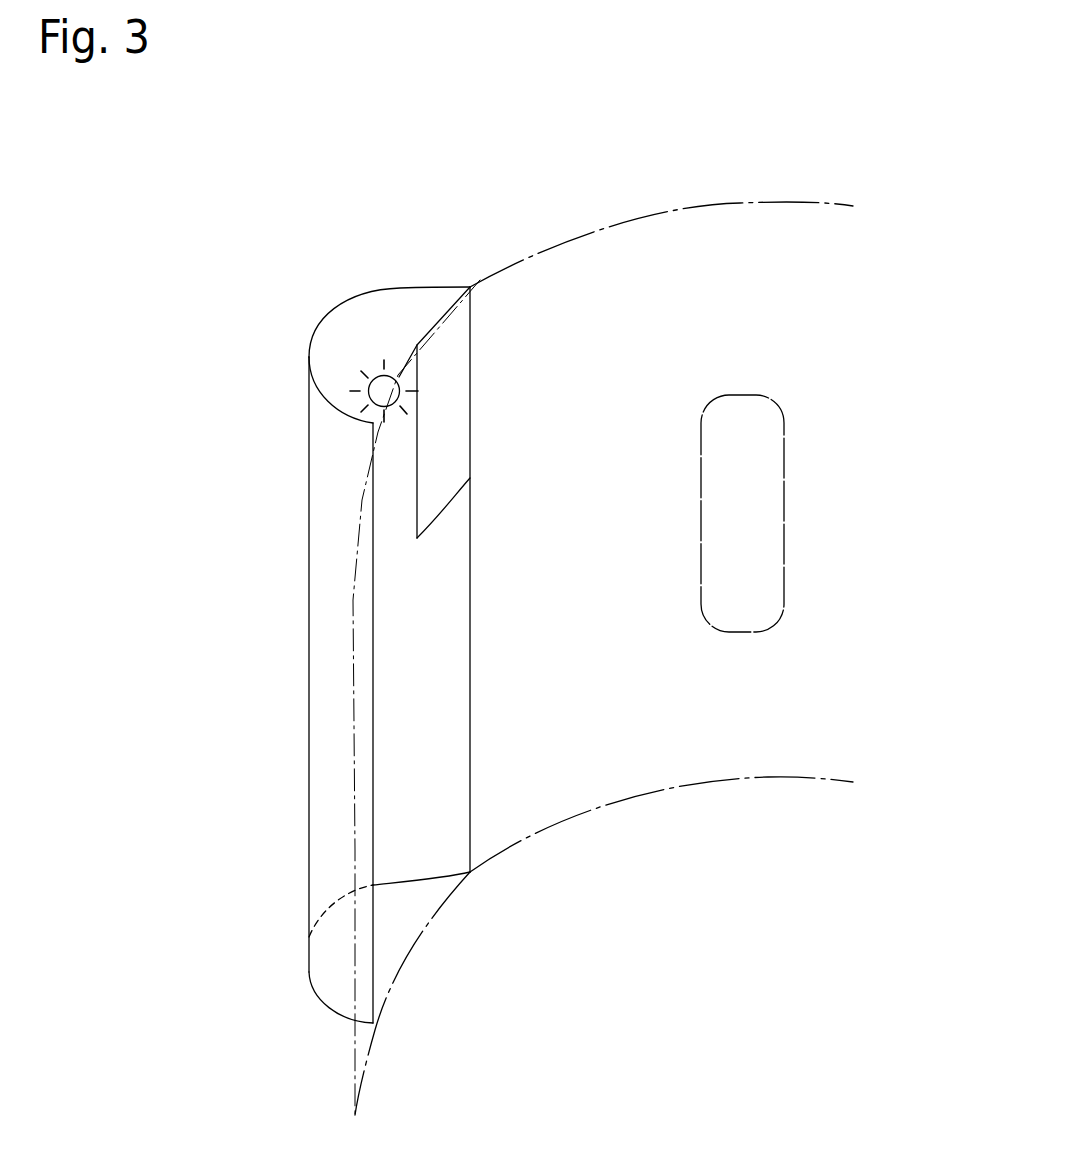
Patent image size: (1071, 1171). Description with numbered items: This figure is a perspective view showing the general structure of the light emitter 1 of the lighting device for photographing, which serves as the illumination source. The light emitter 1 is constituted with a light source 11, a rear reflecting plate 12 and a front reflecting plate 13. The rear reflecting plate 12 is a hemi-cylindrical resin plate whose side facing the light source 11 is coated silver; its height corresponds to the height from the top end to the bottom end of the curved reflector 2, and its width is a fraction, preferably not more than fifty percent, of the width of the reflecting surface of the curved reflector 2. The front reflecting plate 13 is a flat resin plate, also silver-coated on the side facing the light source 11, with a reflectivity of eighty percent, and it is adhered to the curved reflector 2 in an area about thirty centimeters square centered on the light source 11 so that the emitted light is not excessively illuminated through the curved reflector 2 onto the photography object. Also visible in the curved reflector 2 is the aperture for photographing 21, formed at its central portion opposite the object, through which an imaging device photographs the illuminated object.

The light emitter 1 is at (248, 298).
The curved reflector 2 is at (610, 223).
The light source 11 is at (380, 376).
The rear reflecting plate 12 is at (333, 491).
The front reflecting plate 13 is at (457, 390).
The aperture for photographing 21 is at (784, 440).